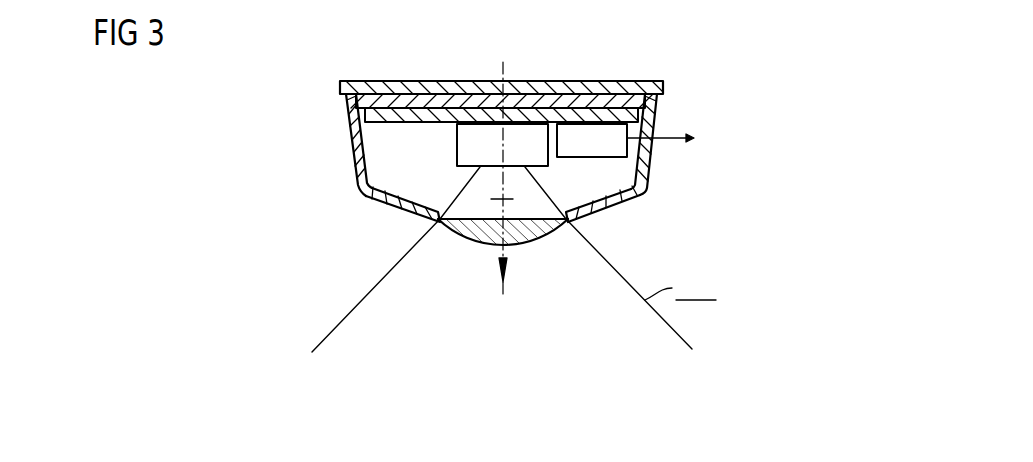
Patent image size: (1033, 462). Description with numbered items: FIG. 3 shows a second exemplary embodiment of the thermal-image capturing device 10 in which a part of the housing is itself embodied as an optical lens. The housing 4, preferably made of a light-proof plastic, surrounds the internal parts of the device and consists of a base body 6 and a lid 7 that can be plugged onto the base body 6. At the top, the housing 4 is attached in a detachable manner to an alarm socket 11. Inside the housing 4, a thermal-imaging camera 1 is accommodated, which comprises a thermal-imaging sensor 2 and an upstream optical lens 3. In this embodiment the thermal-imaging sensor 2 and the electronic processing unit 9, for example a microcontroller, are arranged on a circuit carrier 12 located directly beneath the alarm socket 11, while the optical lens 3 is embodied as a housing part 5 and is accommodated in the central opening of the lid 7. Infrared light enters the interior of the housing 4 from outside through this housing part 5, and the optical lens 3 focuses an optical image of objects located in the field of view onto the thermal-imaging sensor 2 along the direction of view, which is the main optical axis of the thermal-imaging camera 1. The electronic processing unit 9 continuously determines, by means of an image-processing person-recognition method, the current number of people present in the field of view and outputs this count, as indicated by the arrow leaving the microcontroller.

The thermal-imaging camera 1 is at (455, 172).
The thermal-imaging sensor 2 is at (502, 145).
The optical lens 3 is at (553, 230).
The housing 4 is at (466, 161).
The housing part 5 is at (503, 232).
The base body 6 is at (352, 125).
The lid 7 is at (373, 208).
The electronic processing unit 9 is at (612, 128).
The thermal-image capturing device 10 is at (722, 78).
The alarm socket 11 is at (341, 89).
The circuit carrier 12 is at (436, 117).